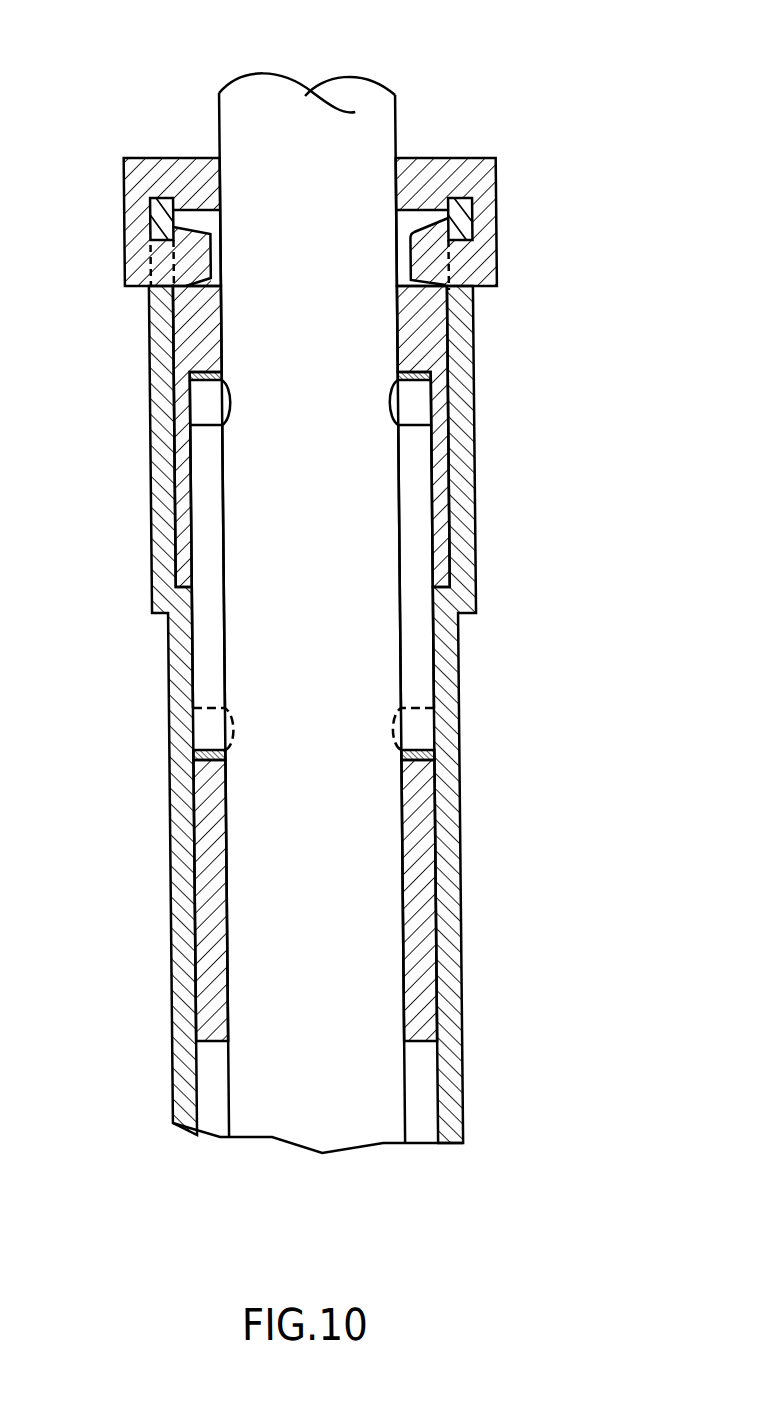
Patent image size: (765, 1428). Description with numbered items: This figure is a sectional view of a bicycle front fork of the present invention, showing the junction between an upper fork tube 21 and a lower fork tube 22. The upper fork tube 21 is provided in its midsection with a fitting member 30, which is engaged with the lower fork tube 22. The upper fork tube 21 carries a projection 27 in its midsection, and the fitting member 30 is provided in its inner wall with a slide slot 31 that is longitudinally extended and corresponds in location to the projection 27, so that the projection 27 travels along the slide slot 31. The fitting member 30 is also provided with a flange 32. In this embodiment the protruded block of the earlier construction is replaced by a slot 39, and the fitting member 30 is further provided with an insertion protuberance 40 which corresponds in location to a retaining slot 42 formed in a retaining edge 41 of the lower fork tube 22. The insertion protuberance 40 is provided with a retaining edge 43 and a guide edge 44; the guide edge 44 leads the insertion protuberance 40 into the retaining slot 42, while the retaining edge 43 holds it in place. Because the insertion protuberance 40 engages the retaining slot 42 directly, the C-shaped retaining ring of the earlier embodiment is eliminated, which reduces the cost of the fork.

The upper fork tube 21 is at (295, 1123).
The lower fork tube 22 is at (444, 818).
The projection 27 is at (202, 407).
The fitting member 30 is at (186, 330).
The slide slot 31 is at (204, 518).
The flange 32 is at (162, 170).
The slot 39 is at (409, 225).
The insertion protuberance 40 is at (436, 250).
The retaining edge 41 is at (495, 166).
The retaining slot 42 is at (474, 274).
The retaining edge 43 is at (446, 212).
The guide edge 44 is at (438, 291).